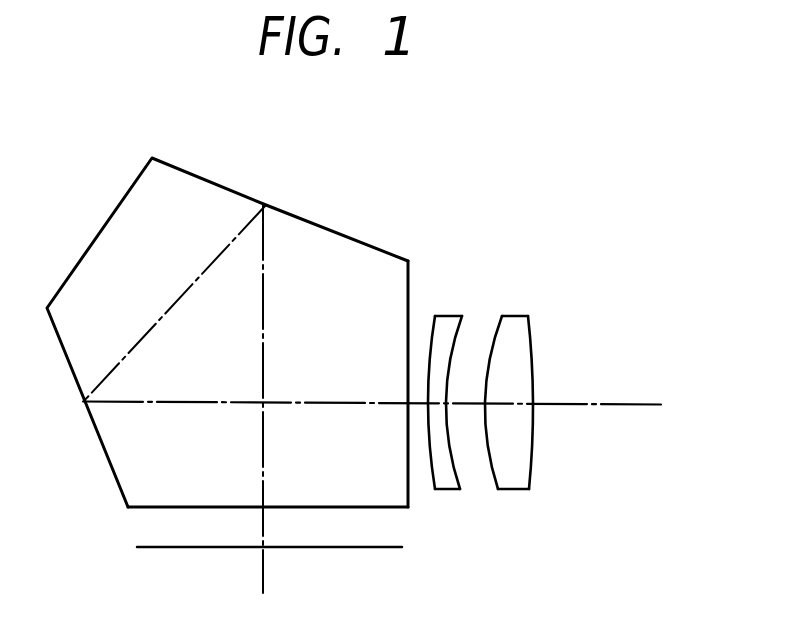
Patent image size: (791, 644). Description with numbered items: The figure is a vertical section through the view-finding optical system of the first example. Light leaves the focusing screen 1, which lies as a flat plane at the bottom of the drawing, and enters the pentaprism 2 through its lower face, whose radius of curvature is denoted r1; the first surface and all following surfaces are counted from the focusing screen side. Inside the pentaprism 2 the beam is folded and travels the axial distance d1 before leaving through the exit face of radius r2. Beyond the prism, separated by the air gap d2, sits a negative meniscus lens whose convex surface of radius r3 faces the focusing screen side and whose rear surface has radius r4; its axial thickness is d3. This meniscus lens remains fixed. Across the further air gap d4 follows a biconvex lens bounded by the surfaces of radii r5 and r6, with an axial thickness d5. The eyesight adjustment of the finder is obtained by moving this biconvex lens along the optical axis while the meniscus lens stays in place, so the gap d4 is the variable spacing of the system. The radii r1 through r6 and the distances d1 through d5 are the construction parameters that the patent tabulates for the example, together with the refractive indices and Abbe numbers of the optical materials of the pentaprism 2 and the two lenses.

The focusing screen 1 is at (170, 548).
The pentaprism 2 is at (248, 352).
The radius of curvature of the first surface r1 is at (162, 508).
The radius of curvature of the second surface r2 is at (410, 297).
The radius of curvature of the third surface r3 is at (431, 323).
The radius of curvature of the fourth surface r4 is at (461, 329).
The radius of curvature of the fifth surface r5 is at (497, 335).
The radius of curvature of the sixth surface r6 is at (533, 320).
The distance between the first and second surfaces d1 is at (266, 452).
The distance between the second and third surfaces d2 is at (416, 407).
The distance between the third and fourth surfaces d3 is at (433, 407).
The distance between the fourth and fifth surfaces d4 is at (472, 407).
The distance between the fifth and sixth surfaces d5 is at (512, 407).